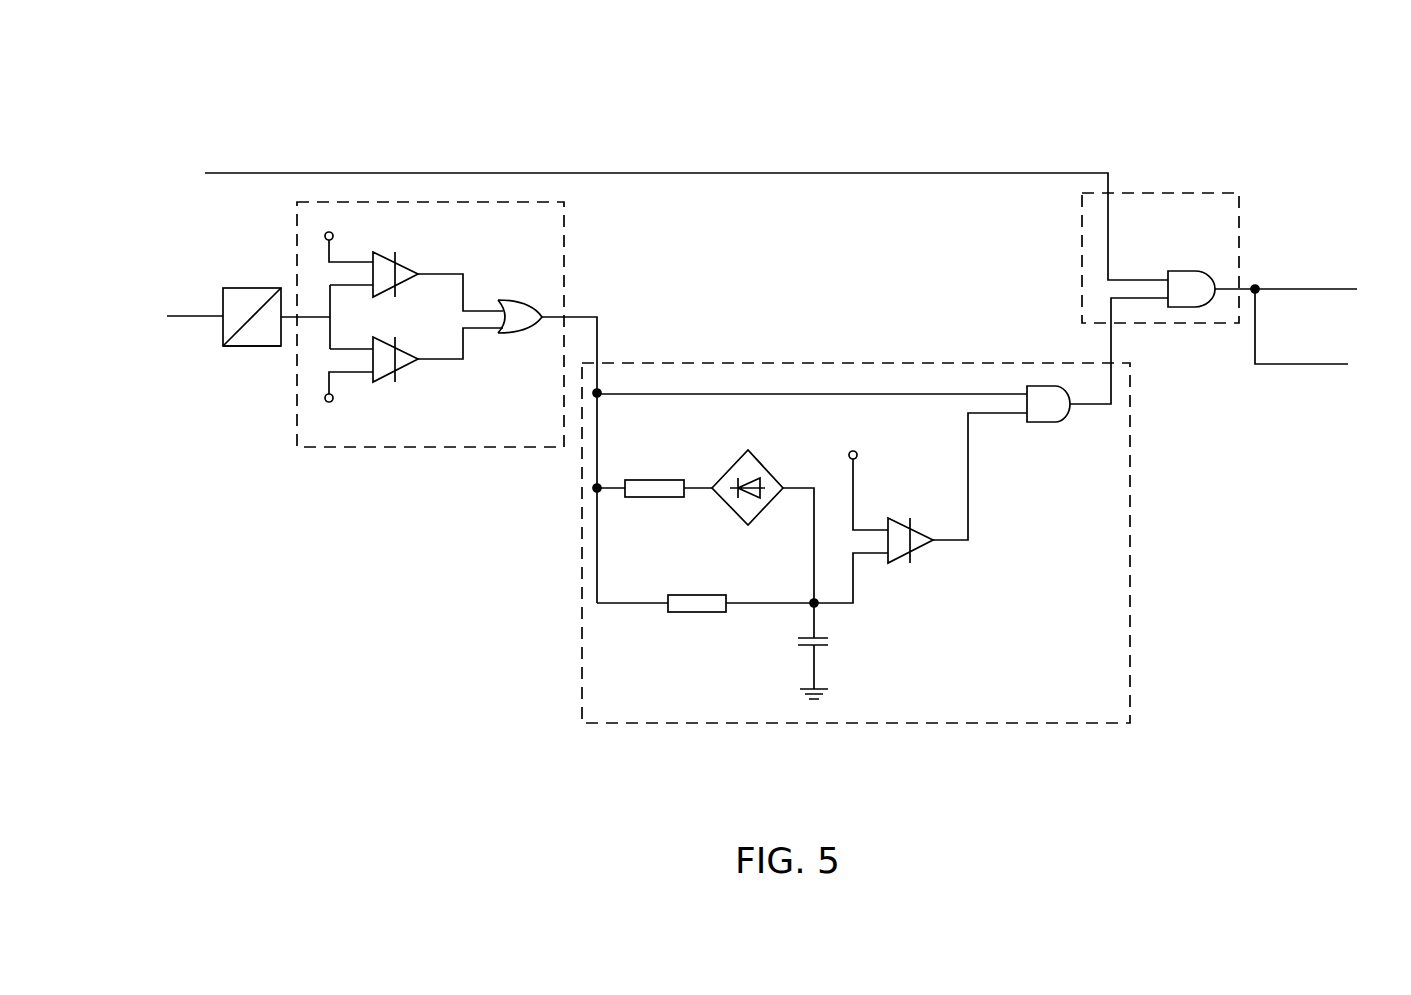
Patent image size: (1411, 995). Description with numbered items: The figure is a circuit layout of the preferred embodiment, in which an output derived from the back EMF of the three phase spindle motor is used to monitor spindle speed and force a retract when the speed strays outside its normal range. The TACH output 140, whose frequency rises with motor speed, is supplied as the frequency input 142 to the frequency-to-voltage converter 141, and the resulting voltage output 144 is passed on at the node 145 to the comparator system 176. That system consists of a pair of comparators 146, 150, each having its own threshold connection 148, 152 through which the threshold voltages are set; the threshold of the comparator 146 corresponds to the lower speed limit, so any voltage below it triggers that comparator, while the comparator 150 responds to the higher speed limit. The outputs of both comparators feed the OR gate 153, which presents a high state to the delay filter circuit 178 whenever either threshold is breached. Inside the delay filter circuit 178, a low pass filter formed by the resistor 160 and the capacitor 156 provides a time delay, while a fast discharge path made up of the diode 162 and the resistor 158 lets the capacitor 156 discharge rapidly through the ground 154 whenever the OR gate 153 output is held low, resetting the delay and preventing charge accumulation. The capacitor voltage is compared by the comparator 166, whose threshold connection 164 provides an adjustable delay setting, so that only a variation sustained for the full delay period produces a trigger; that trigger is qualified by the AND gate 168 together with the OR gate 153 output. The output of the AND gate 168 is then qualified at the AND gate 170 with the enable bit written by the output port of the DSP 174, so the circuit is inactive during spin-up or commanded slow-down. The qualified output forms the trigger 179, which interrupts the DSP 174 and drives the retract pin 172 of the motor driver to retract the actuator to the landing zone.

The TACH output 140 is at (188, 317).
The frequency-to-voltage converter 141 is at (248, 347).
The frequency input 142 is at (222, 312).
The voltage output 144 is at (277, 313).
The detector output node 145 is at (327, 313).
The comparator 146 is at (403, 277).
The upper threshold input 148 is at (331, 233).
The comparator 150 is at (408, 365).
The lower threshold input 152 is at (332, 400).
The OR gate 153 is at (528, 327).
The ground 154 is at (823, 693).
The capacitor 156 is at (823, 638).
The resistor 158 is at (646, 480).
The resistor 160 is at (707, 614).
The diode 162 is at (772, 468).
The timer threshold input 164 is at (853, 451).
The comparator 166 is at (927, 535).
The AND gate 168 is at (1045, 422).
The AND gate 170 is at (1185, 272).
The retract pin 172 is at (1347, 290).
The DSP 174 is at (214, 173).
The comparator system 176 is at (564, 240).
The delay filter circuit 178 is at (893, 363).
The trigger 179 is at (1242, 233).